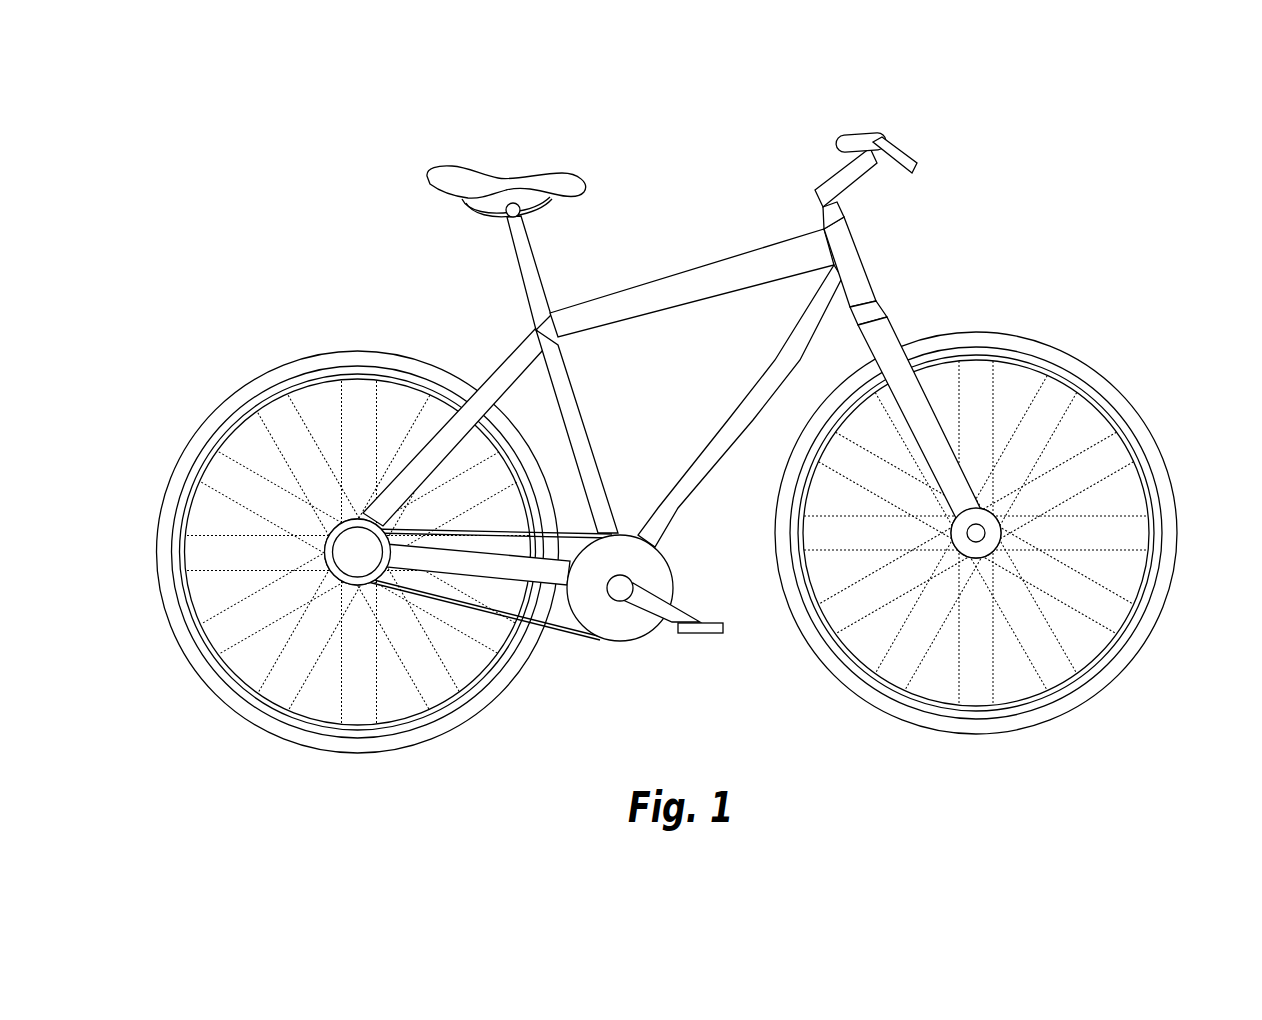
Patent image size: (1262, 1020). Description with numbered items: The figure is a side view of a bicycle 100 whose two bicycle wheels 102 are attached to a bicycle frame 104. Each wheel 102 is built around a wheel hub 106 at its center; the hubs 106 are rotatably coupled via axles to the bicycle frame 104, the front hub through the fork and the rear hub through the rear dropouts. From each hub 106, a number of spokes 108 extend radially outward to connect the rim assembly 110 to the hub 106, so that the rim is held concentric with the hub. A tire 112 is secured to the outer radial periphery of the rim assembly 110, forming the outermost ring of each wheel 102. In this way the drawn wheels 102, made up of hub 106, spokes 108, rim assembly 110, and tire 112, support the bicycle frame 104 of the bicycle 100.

The bicycle 100 is at (934, 97).
The bicycle wheel 102 is at (343, 358).
The bicycle frame 104 is at (843, 245).
The wheel hub 106 is at (365, 578).
The spokes 108 is at (478, 640).
The rim assembly 110 is at (260, 717).
The tire 112 is at (458, 720).